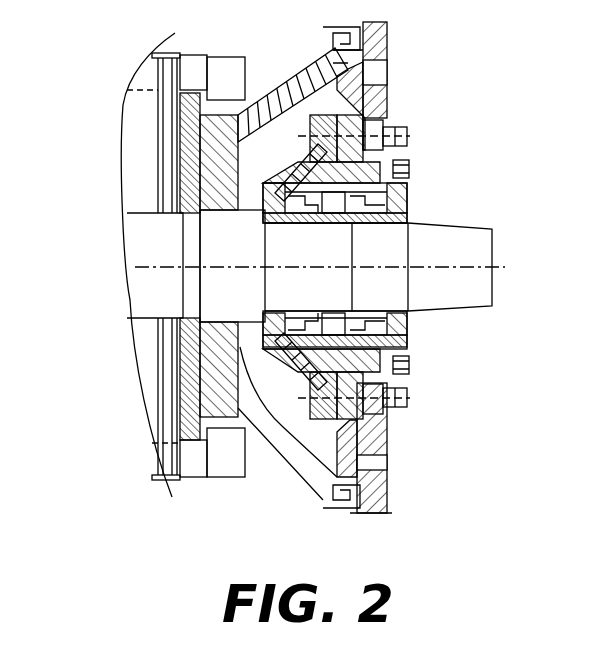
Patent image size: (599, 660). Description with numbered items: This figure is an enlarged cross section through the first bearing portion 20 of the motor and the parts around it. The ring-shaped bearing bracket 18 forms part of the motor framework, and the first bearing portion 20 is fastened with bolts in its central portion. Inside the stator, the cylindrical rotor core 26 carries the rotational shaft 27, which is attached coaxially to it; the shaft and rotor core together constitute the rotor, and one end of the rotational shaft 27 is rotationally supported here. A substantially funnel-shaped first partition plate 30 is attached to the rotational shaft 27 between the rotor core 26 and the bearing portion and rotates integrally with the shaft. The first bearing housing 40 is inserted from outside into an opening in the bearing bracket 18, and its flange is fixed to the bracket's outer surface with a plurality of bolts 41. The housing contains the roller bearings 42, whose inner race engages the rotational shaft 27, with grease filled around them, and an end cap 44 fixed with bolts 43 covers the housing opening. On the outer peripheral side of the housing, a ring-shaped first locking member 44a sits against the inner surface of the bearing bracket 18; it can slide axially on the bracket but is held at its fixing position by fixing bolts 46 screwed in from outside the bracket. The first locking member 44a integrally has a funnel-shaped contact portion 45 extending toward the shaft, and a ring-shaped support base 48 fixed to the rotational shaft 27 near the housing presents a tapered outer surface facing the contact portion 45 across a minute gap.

The bearing bracket 18 is at (382, 48).
The first bearing portion 20 is at (425, 373).
The rotor core 26 is at (143, 390).
The rotational shaft 27 is at (137, 292).
The first partition plate 30 is at (292, 73).
The first bearing housing 40 is at (397, 152).
The bolts 41 is at (390, 134).
The roller bearings 42 is at (338, 310).
The bolts 43 is at (397, 168).
The end cap 44 is at (405, 201).
The first locking member 44a is at (306, 160).
The contact portion 45 is at (300, 362).
The fixing bolts 46 is at (388, 114).
The support base 48 is at (263, 317).